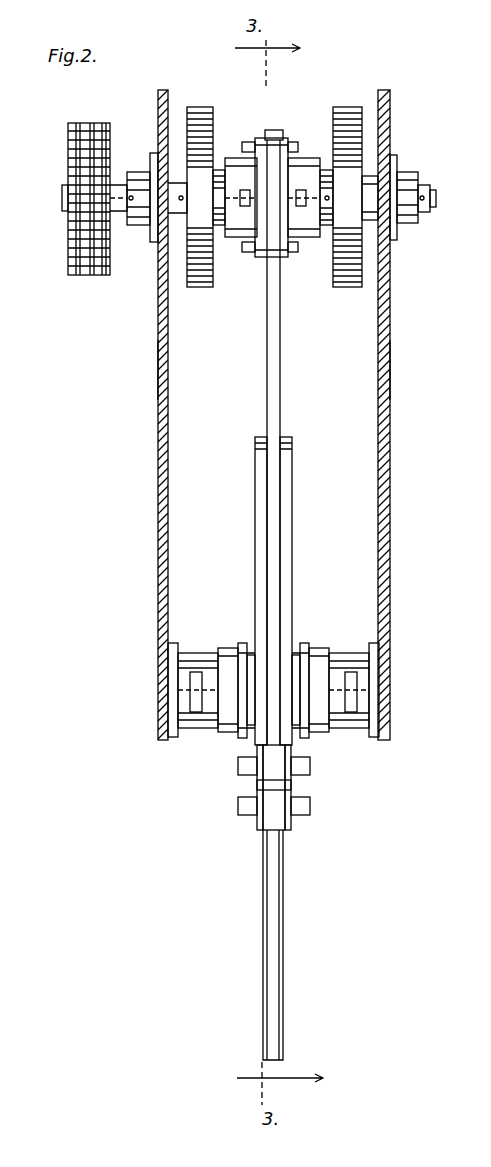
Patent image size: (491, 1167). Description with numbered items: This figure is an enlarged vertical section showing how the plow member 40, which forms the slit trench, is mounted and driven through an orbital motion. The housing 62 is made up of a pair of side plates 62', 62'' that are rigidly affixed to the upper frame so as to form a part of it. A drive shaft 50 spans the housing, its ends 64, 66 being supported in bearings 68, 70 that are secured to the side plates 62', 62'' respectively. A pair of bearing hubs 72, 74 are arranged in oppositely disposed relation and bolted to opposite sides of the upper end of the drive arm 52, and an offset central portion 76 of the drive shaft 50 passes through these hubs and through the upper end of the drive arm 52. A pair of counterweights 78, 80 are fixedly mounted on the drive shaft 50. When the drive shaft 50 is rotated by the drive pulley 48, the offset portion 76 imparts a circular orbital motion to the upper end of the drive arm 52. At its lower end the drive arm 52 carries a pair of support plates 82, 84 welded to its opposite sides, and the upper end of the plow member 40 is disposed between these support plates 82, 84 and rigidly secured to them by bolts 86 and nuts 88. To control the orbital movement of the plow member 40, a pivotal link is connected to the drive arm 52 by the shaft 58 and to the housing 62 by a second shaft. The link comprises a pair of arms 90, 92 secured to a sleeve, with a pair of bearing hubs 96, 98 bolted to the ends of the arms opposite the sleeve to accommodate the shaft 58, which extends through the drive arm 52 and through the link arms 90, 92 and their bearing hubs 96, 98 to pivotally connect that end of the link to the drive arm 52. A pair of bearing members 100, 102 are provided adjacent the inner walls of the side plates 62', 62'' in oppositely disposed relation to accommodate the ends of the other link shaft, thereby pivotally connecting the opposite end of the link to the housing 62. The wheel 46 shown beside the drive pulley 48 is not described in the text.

The plow member 40 is at (266, 895).
The wheel 46 is at (88, 276).
The drive pulley 48 is at (76, 252).
The drive shaft 50 is at (377, 180).
The drive arm 52 is at (292, 373).
The shaft 58 is at (195, 690).
The housing 62 is at (245, 415).
The side plate 62' is at (127, 370).
The side plate 62'' is at (413, 370).
The end of drive shaft 64 is at (162, 212).
The end of drive shaft 66 is at (370, 212).
The bearing 68 is at (137, 172).
The bearing 70 is at (406, 176).
The bearing hub 72 is at (231, 158).
The bearing hub 74 is at (310, 158).
The offset central portion 76 is at (237, 225).
The counterweight 78 is at (195, 108).
The counterweight 80 is at (348, 108).
The support plate 82 is at (256, 520).
The support plate 84 is at (291, 520).
The bolts 86 is at (304, 804).
The nuts 88 is at (242, 804).
The link arm 90 is at (306, 643).
The link arm 92 is at (242, 643).
The bearing hub 96 is at (338, 718).
The bearing hub 98 is at (213, 714).
The bearing member 100 is at (180, 660).
The bearing member 102 is at (360, 660).